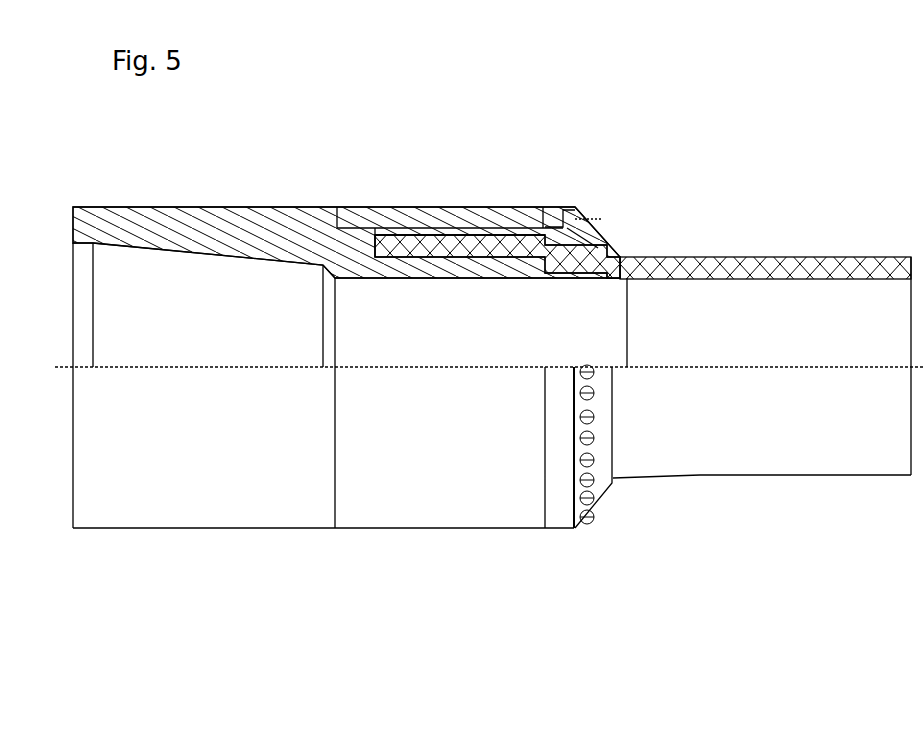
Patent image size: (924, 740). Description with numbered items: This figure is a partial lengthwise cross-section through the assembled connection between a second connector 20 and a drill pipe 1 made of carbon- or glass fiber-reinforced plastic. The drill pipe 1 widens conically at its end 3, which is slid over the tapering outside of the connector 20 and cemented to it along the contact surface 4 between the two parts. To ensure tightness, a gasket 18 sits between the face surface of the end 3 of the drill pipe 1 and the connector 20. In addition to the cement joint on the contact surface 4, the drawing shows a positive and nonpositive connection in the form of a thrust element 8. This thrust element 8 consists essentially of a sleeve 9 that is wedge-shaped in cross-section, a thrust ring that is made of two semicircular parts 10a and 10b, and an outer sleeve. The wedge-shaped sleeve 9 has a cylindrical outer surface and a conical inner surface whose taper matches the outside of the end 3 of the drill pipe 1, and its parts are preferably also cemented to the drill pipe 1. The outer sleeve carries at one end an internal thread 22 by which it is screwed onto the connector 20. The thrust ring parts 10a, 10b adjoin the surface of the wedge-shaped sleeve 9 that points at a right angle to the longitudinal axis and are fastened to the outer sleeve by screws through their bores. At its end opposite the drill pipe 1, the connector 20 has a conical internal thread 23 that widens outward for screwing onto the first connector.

The drill pipe 1 is at (713, 260).
The end of the drill pipe 3 is at (463, 240).
The contact surface 4 is at (425, 257).
The thrust element 8 is at (593, 200).
The wedge-shaped sleeve 9 is at (505, 233).
The thrust ring part 10a is at (567, 233).
The thrust ring part 10b is at (557, 468).
The gasket 18 is at (381, 238).
The second connector 20 is at (240, 240).
The internal thread 22 is at (353, 228).
The conical internal thread 23 is at (127, 249).